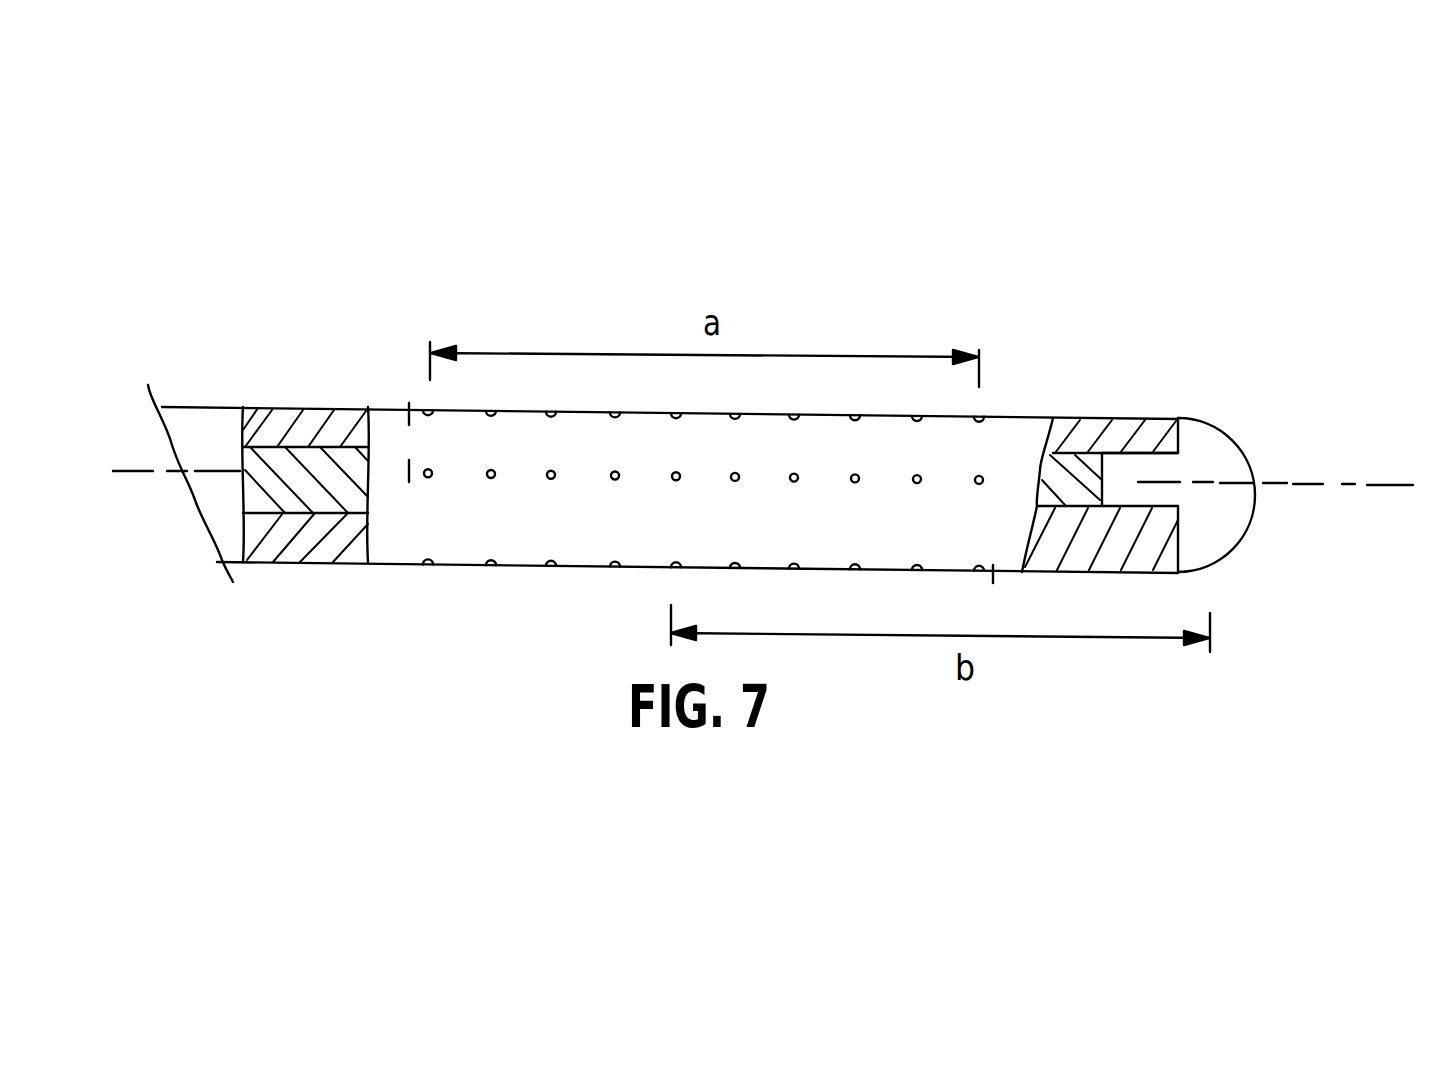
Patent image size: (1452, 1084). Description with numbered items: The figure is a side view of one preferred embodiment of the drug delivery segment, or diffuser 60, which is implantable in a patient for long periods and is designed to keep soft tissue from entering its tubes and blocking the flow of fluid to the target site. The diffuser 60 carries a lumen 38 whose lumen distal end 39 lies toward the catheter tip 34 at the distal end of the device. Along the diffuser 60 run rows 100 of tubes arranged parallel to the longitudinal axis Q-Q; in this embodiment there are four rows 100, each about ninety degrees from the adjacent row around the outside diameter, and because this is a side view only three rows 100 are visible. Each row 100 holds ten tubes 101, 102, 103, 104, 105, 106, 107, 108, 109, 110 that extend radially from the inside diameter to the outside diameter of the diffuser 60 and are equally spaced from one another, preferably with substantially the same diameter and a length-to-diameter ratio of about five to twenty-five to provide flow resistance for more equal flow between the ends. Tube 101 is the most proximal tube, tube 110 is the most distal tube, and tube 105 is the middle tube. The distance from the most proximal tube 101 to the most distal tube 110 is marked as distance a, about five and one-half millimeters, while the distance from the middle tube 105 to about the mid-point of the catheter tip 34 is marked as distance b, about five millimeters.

The catheter tip 34 is at (1252, 520).
The lumen 38 is at (278, 483).
The lumen distal end 39 is at (1130, 428).
The drug delivery segment (diffuser) 60 is at (287, 626).
The row 100 is at (407, 472).
The tube 101 is at (428, 405).
The tube 102 is at (488, 478).
The tube 103 is at (549, 479).
The tube 104 is at (612, 479).
The middle tube 105 is at (675, 480).
The tube 106 is at (736, 481).
The tube 107 is at (793, 482).
The tube 108 is at (853, 483).
The tube 109 is at (916, 484).
The tube 110 is at (980, 416).